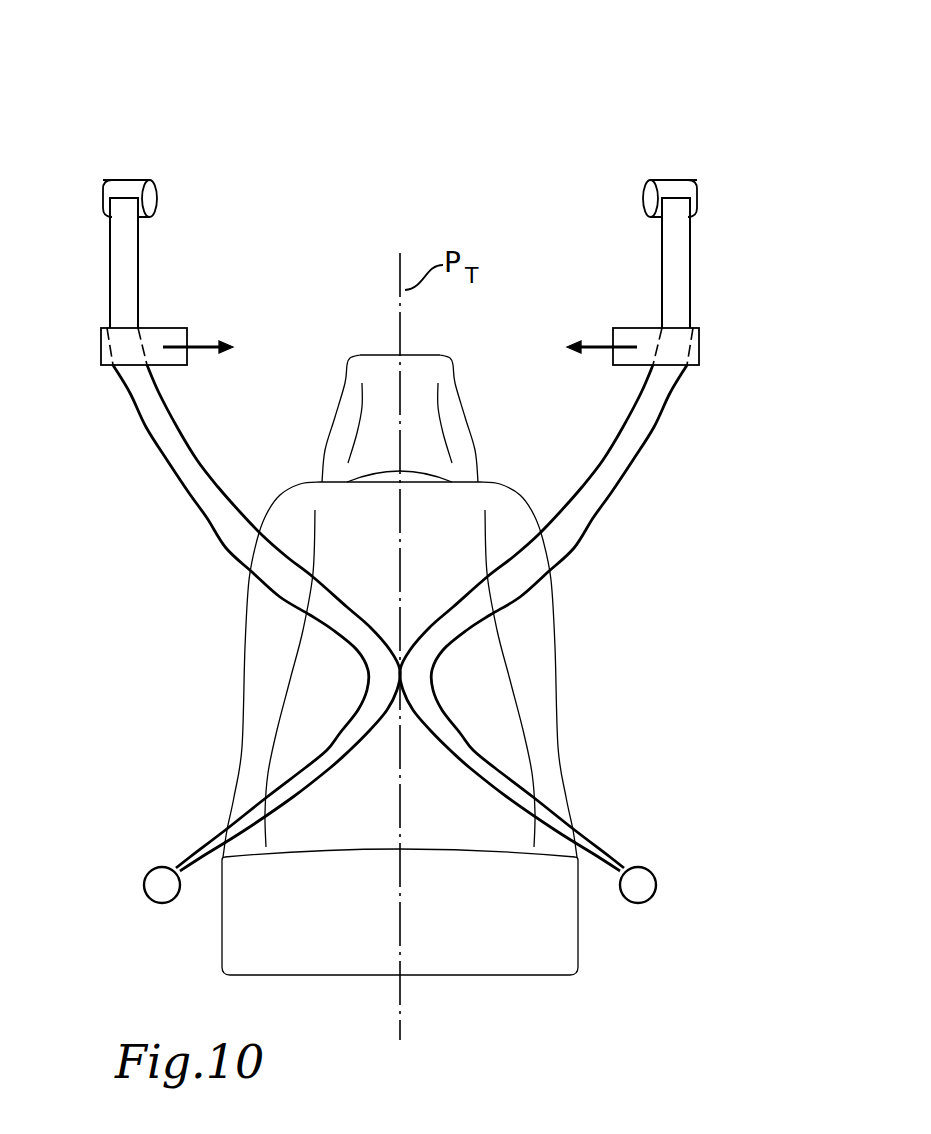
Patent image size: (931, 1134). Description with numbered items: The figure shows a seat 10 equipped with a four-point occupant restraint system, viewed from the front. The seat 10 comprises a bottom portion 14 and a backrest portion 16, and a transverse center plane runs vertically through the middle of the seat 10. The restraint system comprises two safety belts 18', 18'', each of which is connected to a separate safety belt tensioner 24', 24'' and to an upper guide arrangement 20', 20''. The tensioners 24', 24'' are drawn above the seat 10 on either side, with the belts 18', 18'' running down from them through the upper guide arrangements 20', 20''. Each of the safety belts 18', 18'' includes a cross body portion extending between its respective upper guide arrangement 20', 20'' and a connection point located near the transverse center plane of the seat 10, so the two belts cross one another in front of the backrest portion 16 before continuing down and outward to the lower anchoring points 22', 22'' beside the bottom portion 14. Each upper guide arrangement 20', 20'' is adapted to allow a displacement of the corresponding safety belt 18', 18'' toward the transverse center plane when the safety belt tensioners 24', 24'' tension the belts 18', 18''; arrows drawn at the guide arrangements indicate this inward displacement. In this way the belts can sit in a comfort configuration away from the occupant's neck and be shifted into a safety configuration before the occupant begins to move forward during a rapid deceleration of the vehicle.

The seat 10 is at (209, 77).
The bottom portion 14 is at (458, 952).
The backrest portion 16 is at (267, 675).
The safety belt 18' is at (546, 599).
The safety belt 18'' is at (253, 599).
The upper guide arrangement 20' is at (682, 281).
The upper guide arrangement 20'' is at (169, 281).
The first anchor 22' is at (681, 858).
The second anchor 22'' is at (119, 858).
The safety belt tensioner 24' is at (627, 177).
The safety belt tensioner 24'' is at (181, 177).